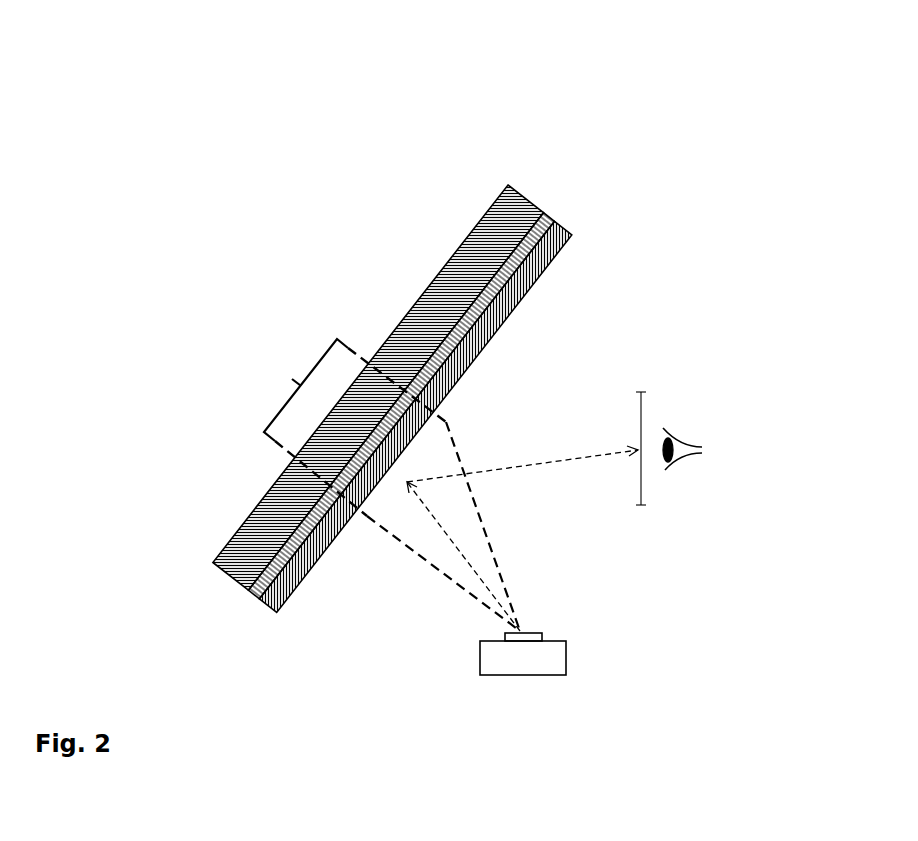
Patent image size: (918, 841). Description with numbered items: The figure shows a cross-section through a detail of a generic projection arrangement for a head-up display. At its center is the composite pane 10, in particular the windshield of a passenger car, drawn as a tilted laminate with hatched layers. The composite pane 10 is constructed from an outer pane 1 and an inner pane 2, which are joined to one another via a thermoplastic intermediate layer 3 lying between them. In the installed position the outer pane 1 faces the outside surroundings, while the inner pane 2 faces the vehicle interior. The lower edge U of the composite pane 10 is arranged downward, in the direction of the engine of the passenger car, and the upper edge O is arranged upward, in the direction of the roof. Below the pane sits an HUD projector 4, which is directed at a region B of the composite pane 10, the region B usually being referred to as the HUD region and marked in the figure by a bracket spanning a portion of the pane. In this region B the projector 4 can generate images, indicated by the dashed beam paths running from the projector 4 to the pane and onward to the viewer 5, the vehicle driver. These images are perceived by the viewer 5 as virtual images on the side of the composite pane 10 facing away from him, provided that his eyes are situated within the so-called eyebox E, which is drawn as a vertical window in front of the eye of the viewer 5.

The composite pane 10 is at (425, 346).
The outer pane 1 is at (452, 258).
The inner pane 2 is at (558, 240).
The thermoplastic intermediate layer 3 is at (548, 217).
The HUD projector 4 is at (545, 662).
The viewer 5 is at (702, 428).
The upper edge O is at (540, 168).
The lower edge U is at (245, 625).
The region B is at (390, 485).
The eyebox E is at (657, 407).